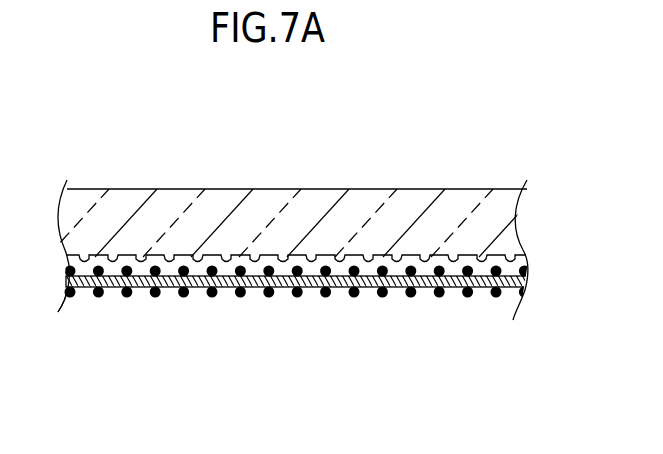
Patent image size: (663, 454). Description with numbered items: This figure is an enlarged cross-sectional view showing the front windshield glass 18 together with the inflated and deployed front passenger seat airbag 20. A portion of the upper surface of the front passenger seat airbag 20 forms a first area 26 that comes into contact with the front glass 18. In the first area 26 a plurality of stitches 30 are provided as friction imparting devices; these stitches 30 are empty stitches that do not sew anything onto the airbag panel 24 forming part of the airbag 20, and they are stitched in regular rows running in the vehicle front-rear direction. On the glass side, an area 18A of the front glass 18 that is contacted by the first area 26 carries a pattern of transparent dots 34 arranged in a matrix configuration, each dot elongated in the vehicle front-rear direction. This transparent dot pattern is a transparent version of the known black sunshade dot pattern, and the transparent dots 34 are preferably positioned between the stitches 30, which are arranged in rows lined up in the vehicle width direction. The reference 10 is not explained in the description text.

The laminated body 10 is at (420, 324).
The front windshield glass 18 is at (377, 188).
The area of the front glass 18A is at (225, 187).
The front passenger seat airbag 20 is at (510, 290).
The airbag panel 24 is at (83, 282).
The first area 26 is at (262, 296).
The stitches 30 is at (356, 296).
The transparent dots 34 is at (456, 275).